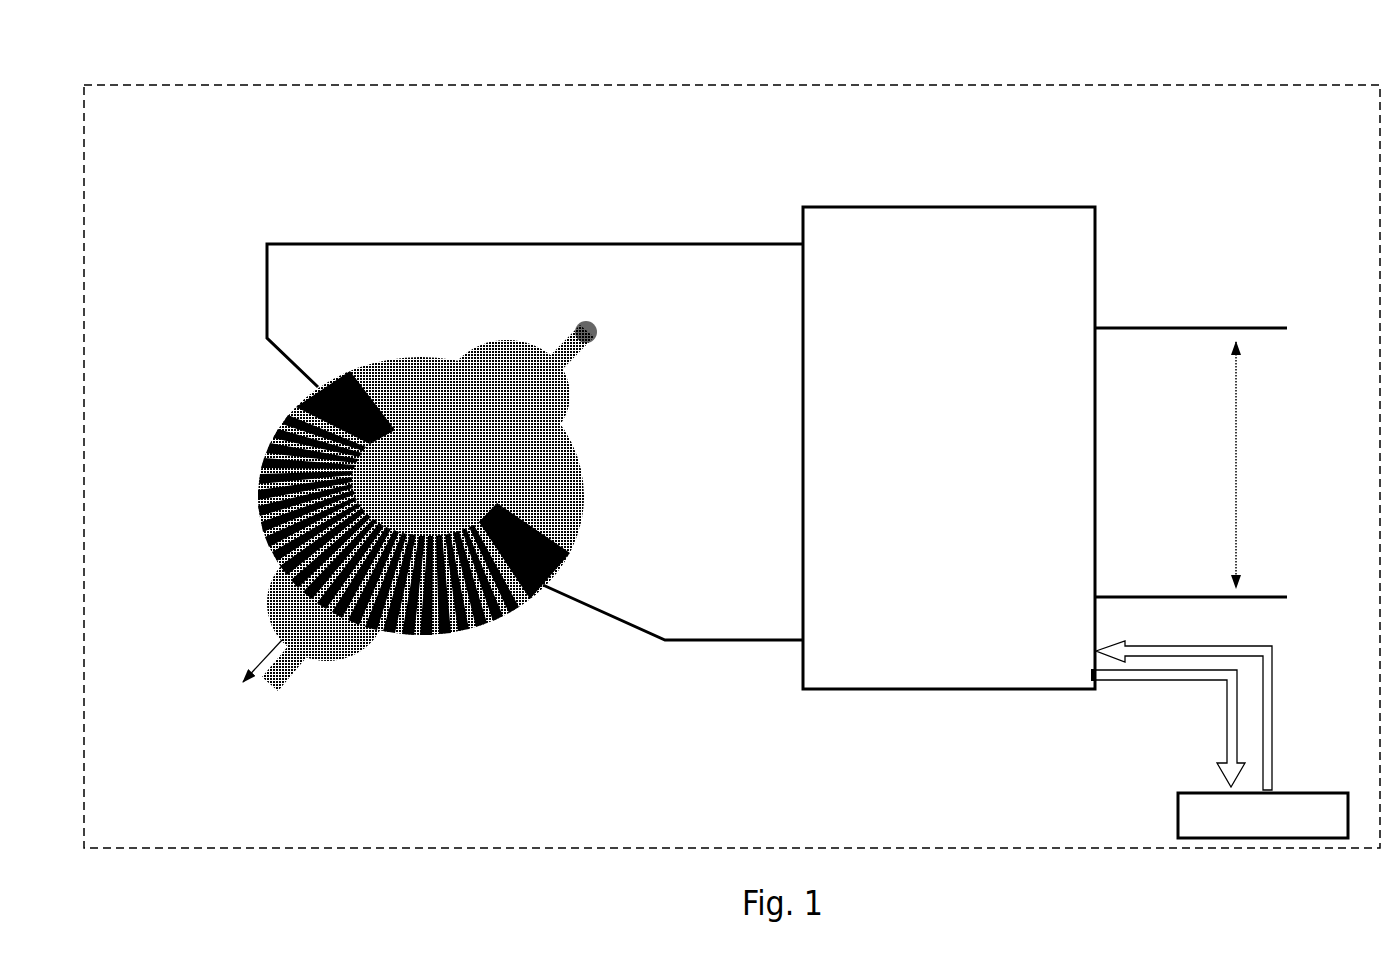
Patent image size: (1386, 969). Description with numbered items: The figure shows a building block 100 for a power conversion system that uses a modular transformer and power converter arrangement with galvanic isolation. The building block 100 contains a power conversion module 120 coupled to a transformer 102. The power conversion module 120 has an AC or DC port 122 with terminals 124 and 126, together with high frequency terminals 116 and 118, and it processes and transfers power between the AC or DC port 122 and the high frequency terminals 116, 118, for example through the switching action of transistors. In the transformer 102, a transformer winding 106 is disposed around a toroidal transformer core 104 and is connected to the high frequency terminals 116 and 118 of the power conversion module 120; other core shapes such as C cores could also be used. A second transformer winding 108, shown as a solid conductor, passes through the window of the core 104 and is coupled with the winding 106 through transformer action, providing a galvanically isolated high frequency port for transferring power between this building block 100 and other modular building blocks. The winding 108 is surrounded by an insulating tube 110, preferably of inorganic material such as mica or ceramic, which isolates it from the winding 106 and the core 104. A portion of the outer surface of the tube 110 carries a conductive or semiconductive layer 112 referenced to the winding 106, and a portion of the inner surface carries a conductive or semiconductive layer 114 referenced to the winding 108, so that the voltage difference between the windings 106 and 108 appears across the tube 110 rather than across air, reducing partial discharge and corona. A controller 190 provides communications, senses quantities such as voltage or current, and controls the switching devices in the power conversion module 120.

The building block 100 is at (224, 82).
The transformer 102 is at (427, 525).
The transformer core 104 is at (340, 380).
The transformer winding 106 is at (257, 465).
The second transformer winding 108 is at (562, 350).
The insulating tube 110 is at (577, 406).
The conductive or semiconductive layer 112 is at (426, 505).
The conductive or semiconductive layer 114 is at (477, 378).
The high frequency terminal 116 is at (708, 238).
The high frequency terminal 118 is at (714, 636).
The power conversion module 120 is at (950, 205).
The AC or DC port 122 is at (1243, 400).
The terminal 124 is at (1141, 323).
The terminal 126 is at (1146, 592).
The controller 190 is at (1299, 780).